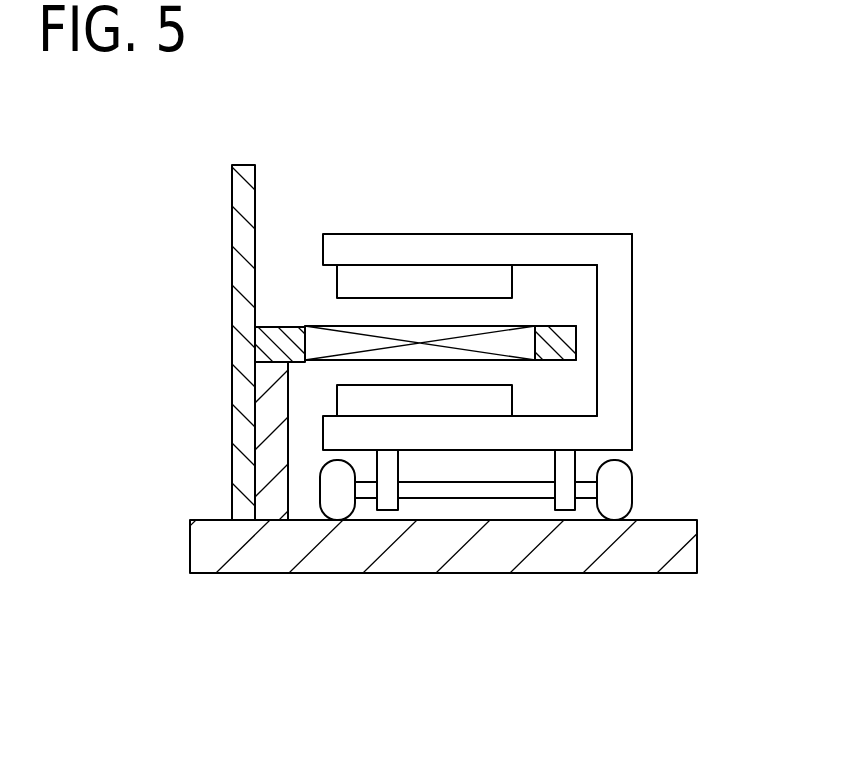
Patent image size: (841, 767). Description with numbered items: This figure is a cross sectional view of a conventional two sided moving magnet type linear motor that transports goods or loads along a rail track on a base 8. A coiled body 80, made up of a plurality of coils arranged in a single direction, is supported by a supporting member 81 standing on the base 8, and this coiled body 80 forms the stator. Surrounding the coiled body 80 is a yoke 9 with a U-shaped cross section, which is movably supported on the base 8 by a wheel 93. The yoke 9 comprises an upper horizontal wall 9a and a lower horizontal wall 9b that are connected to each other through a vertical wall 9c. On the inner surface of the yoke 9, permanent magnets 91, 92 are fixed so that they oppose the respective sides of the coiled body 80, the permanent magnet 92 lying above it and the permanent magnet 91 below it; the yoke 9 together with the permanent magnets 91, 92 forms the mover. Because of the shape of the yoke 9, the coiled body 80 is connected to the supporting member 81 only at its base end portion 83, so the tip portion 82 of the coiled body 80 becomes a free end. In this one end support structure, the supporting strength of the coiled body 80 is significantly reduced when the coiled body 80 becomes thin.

The base 8 is at (677, 519).
The yoke 9 is at (530, 303).
The upper horizontal wall 9a is at (537, 245).
The lower horizontal wall 9b is at (557, 420).
The vertical wall 9c is at (620, 262).
The coiled body 80 is at (340, 338).
The supporting member 81 is at (232, 212).
The tip portion 82 is at (558, 363).
The base end portion 83 is at (287, 356).
The permanent magnet 91 is at (427, 403).
The permanent magnet 92 is at (422, 277).
The wheel 93 is at (620, 487).